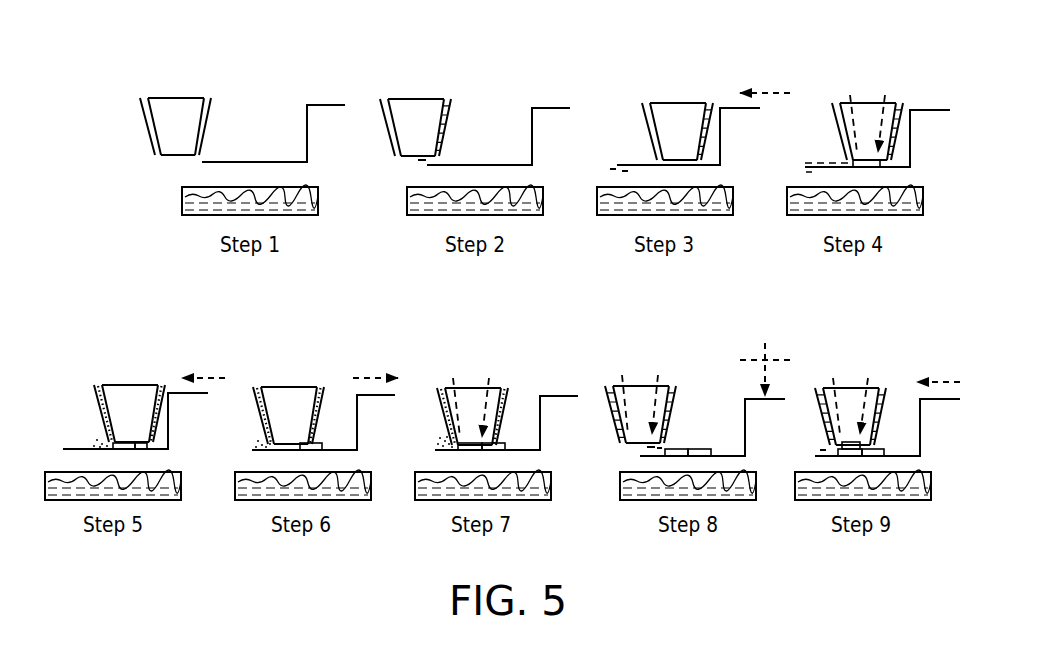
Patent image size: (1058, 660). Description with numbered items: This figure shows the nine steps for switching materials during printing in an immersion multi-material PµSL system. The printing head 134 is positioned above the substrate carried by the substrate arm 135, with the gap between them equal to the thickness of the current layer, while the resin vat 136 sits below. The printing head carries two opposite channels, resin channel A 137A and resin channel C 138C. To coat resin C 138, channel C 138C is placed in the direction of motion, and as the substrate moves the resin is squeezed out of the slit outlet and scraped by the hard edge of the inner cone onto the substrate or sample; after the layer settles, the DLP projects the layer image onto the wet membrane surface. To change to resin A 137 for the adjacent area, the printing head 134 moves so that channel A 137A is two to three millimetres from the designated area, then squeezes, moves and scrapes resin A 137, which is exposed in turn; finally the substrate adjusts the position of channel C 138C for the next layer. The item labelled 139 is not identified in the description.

The printing head 134 is at (138, 95).
The substrate arm 135 is at (320, 100).
The resin vat 136 is at (178, 200).
The resin A 137 is at (100, 381).
The resin channel A 137A is at (100, 418).
The resin C 138 is at (447, 96).
The resin channel C 138C is at (446, 115).
The filling streams 139 is at (848, 90).